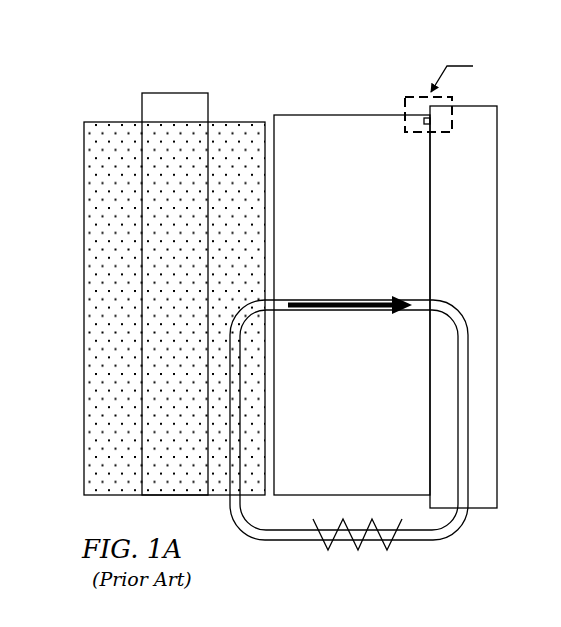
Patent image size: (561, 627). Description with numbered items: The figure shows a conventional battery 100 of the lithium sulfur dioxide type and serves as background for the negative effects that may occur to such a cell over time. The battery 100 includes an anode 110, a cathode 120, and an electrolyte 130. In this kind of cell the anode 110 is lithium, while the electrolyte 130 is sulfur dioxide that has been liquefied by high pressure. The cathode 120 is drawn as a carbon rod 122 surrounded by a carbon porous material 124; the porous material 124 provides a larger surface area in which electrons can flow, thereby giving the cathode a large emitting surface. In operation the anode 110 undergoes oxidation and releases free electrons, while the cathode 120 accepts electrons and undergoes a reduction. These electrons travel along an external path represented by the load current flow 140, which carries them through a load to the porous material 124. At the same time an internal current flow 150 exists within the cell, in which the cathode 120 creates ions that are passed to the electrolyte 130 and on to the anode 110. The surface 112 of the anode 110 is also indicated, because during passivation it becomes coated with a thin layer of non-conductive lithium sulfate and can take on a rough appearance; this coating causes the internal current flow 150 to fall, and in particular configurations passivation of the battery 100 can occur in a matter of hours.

The battery 100 is at (226, 54).
The anode 110 is at (497, 306).
The surface 112 is at (352, 122).
The cathode 120 is at (84, 99).
The carbon rod 122 is at (175, 93).
The carbon porous material 124 is at (95, 308).
The electrolyte 130 is at (368, 221).
The load current flow 140 is at (358, 551).
The internal current flow 150 is at (348, 298).